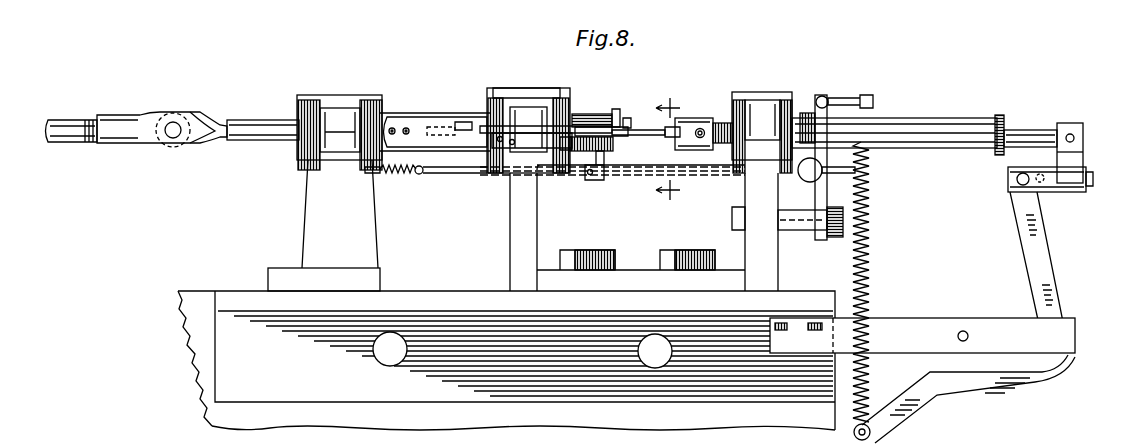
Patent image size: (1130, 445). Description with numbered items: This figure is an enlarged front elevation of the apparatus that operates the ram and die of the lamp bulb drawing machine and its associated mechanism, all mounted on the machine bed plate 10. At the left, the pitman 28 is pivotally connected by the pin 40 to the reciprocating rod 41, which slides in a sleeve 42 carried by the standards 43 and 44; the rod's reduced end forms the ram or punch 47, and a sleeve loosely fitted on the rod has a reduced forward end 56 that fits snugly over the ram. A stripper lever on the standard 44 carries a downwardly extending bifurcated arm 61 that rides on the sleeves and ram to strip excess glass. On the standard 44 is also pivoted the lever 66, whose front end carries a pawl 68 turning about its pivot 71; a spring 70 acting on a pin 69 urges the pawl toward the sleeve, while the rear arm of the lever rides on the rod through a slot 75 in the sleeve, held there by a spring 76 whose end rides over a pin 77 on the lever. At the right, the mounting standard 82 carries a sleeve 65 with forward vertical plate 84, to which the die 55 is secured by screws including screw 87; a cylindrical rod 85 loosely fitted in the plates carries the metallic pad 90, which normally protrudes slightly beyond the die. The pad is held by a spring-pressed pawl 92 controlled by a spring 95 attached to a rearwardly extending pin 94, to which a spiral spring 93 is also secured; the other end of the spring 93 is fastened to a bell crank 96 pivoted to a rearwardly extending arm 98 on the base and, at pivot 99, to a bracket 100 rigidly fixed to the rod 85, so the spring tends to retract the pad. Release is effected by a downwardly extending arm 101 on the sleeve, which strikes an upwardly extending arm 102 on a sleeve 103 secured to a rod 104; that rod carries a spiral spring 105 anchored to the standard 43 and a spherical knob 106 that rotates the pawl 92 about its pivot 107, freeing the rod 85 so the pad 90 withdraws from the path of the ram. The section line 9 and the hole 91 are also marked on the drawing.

The machine bed plate 10 is at (202, 289).
The pitman 28 is at (84, 121).
The pin 40 is at (174, 129).
The reciprocating rod 41 is at (270, 123).
The standard 43 is at (310, 193).
The standard 44 is at (523, 194).
The lever 66 is at (502, 95).
The spring 76 is at (416, 122).
The sleeve 42 is at (429, 114).
The pin 77 is at (463, 122).
The spiral spring 105 is at (397, 173).
The slot 75 is at (480, 138).
The pin 69 is at (557, 147).
The spring 70 is at (538, 136).
The pivot 71 is at (580, 114).
The pawl 68 is at (607, 127).
The forward end of sleeve 56 is at (616, 110).
The bifurcated arm 61 is at (627, 118).
The ram or punch 47 is at (648, 130).
The upwardly extending arm 102 is at (610, 157).
The downwardly extending arm 101 is at (590, 160).
The sleeve 103 is at (595, 178).
The rod 104 is at (633, 175).
The metallic pad 90 is at (676, 137).
The section line 9 is at (668, 148).
The die 55 is at (694, 122).
The screw 87 is at (701, 137).
The vertical plate 84 is at (718, 120).
The mounting standard 82 is at (756, 190).
The pawl 92 is at (823, 122).
The spring 95 is at (823, 96).
The pin 94 is at (860, 98).
The spherical knob 106 is at (810, 174).
The pivot 107 is at (843, 230).
The sleeve 65 is at (918, 126).
The cylindrical rod 85 is at (1016, 131).
The bracket 100 is at (1080, 147).
The pivot 99 is at (1017, 191).
The bell crank 96 is at (1053, 262).
The pivot 91 is at (1060, 340).
The rearwardly extending arm 98 is at (943, 316).
The spiral spring 93 is at (868, 248).